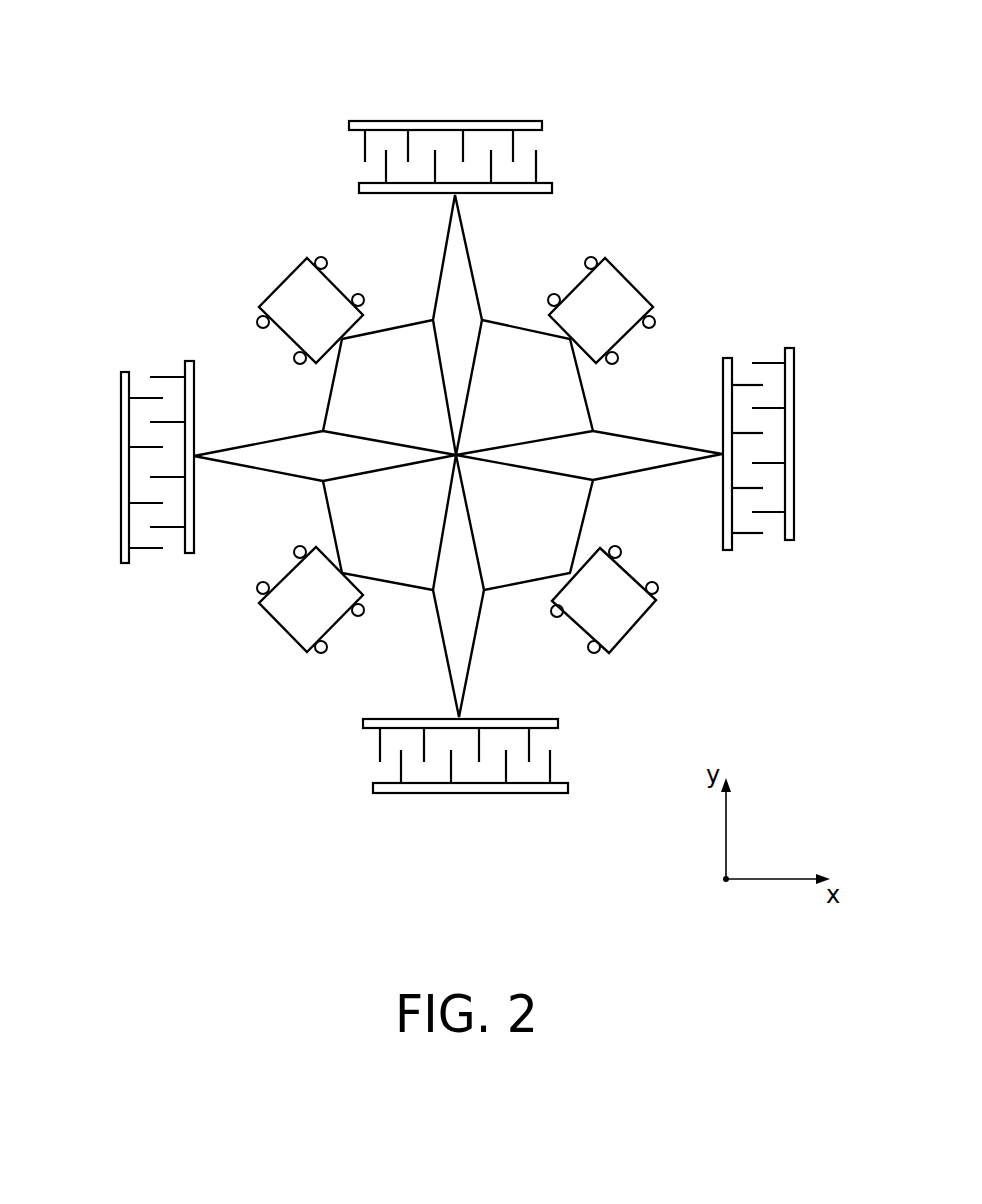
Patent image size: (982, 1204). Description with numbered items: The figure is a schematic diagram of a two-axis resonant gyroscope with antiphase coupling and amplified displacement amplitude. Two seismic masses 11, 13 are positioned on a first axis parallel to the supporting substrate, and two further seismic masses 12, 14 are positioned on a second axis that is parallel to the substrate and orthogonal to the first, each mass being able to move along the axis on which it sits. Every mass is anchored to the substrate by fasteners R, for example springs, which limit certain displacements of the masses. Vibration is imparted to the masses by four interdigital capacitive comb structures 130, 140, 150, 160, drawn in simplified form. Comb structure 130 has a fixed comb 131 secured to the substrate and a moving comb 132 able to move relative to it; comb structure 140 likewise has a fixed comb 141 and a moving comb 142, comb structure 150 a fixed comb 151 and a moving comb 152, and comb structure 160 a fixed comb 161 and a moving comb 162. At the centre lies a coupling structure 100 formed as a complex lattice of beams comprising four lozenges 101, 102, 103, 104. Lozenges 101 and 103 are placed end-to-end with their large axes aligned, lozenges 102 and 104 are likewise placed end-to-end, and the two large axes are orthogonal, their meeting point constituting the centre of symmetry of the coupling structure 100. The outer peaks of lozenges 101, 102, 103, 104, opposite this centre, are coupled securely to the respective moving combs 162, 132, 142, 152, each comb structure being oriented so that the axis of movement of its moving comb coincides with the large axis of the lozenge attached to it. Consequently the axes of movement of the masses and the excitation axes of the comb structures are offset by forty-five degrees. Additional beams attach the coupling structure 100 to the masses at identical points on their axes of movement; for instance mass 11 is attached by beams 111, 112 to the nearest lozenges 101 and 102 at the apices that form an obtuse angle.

The coupling structure 100 is at (240, 572).
The lozenge 101 is at (265, 425).
The lozenge 102 is at (478, 243).
The lozenge 103 is at (650, 425).
The lozenge 104 is at (432, 656).
The beam 111 is at (334, 383).
The beam 112 is at (373, 335).
The seismic mass 11 is at (295, 283).
The seismic mass 12 is at (617, 283).
The seismic mass 13 is at (622, 628).
The seismic mass 14 is at (297, 628).
The fastener R is at (320, 257).
The interdigital capacitive comb structure 130 is at (489, 156).
The fixed comb 131 is at (423, 121).
The moving comb 132 is at (417, 193).
The interdigital capacitive comb structure 140 is at (747, 429).
The fixed comb 141 is at (795, 497).
The moving comb 142 is at (723, 518).
The interdigital capacitive comb structure 150 is at (471, 770).
The fixed comb 151 is at (428, 793).
The moving comb 152 is at (508, 719).
The interdigital capacitive comb structure 160 is at (164, 443).
The fixed comb 161 is at (123, 502).
The moving comb 162 is at (194, 517).